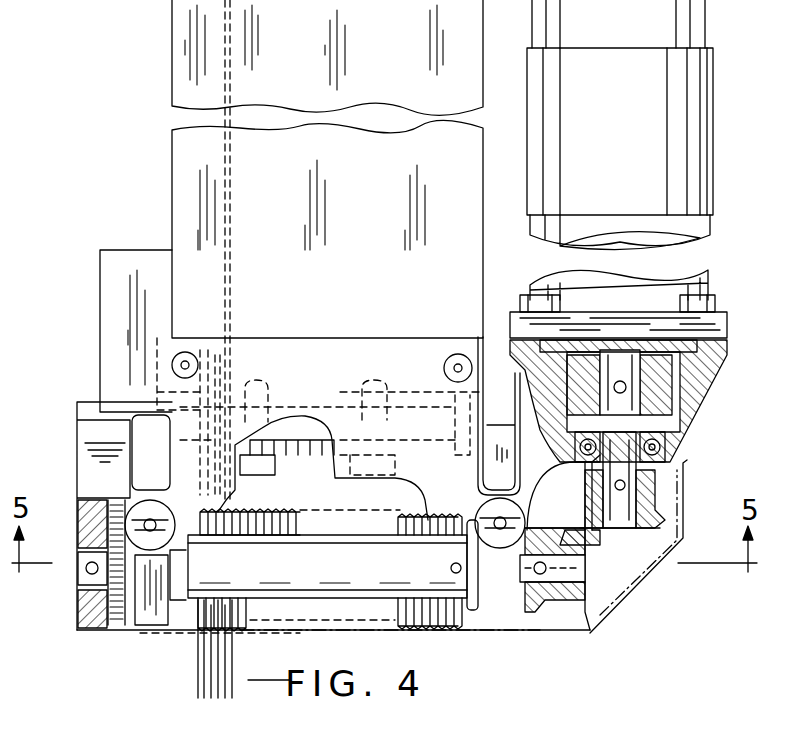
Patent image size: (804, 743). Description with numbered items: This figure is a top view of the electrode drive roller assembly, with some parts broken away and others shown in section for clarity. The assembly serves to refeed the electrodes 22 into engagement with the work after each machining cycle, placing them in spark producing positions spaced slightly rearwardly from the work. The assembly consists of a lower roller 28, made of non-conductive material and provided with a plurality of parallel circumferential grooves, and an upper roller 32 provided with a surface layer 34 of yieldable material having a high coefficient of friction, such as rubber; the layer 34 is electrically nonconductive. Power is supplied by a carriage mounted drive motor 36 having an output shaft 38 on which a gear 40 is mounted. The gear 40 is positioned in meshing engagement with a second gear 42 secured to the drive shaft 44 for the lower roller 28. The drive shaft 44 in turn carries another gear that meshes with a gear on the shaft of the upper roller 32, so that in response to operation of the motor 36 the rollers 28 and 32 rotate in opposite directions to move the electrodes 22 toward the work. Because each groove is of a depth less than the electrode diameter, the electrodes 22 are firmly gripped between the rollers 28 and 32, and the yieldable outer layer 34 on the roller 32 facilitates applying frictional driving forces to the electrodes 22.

The electrodes 22 is at (200, 690).
The lower roller 28 is at (440, 620).
The upper roller 32 is at (190, 598).
The surface layer 34 is at (283, 548).
The drive motor 36 is at (636, 151).
The output shaft 38 is at (620, 505).
The gear 40 is at (640, 488).
The second gear 42 is at (552, 595).
The drive shaft 44 is at (575, 565).